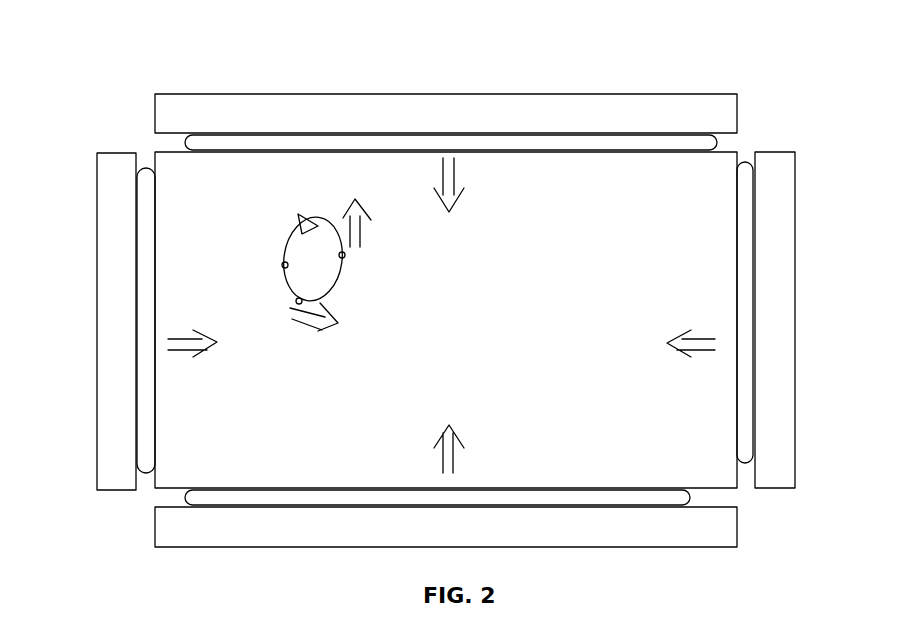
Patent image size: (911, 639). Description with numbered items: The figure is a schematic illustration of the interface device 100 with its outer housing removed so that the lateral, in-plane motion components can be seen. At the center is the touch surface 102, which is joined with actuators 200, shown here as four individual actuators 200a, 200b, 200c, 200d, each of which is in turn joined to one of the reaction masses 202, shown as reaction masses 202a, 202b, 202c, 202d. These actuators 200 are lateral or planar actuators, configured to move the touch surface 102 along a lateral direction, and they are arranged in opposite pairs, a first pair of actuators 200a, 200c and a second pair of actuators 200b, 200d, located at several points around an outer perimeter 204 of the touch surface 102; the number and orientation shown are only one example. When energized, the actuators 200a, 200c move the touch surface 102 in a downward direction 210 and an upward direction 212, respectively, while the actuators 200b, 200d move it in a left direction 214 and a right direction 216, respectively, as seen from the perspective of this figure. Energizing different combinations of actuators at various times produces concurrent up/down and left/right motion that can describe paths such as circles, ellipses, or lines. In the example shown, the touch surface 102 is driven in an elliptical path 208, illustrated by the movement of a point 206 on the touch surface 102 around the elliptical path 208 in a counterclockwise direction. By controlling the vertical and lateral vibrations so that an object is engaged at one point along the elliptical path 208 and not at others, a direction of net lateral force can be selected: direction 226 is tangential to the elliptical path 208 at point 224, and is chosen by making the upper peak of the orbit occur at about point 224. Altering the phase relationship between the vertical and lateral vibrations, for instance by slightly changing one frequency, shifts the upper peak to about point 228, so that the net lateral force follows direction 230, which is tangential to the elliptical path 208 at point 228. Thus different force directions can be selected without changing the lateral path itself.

The interface device 100 is at (789, 74).
The touch surface 102 is at (722, 432).
The actuators 200 is at (740, 145).
The actuator 200a is at (603, 142).
The actuator 200b is at (743, 258).
The actuator 200c is at (562, 492).
The actuator 200d is at (150, 378).
The reaction masses 202 is at (806, 184).
The reaction mass 202a is at (588, 103).
The reaction mass 202b is at (780, 334).
The reaction mass 202c is at (655, 537).
The reaction mass 202d is at (103, 343).
The outer perimeter 204 is at (731, 490).
The point 206 is at (283, 264).
The elliptical path 208 is at (331, 290).
The downward direction 210 is at (455, 182).
The upward direction 212 is at (456, 460).
The left direction 214 is at (700, 336).
The right direction 216 is at (185, 336).
The point 224 is at (302, 298).
The direction 226 is at (308, 340).
The point 228 is at (345, 257).
The direction 230 is at (367, 233).